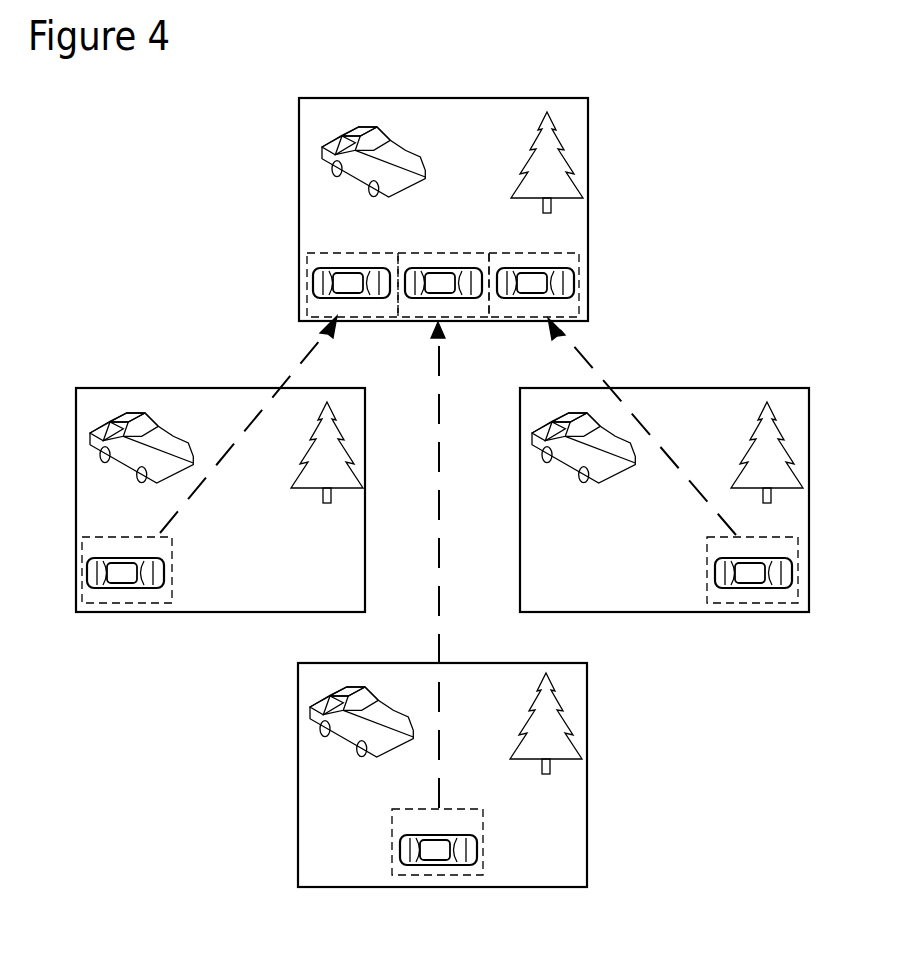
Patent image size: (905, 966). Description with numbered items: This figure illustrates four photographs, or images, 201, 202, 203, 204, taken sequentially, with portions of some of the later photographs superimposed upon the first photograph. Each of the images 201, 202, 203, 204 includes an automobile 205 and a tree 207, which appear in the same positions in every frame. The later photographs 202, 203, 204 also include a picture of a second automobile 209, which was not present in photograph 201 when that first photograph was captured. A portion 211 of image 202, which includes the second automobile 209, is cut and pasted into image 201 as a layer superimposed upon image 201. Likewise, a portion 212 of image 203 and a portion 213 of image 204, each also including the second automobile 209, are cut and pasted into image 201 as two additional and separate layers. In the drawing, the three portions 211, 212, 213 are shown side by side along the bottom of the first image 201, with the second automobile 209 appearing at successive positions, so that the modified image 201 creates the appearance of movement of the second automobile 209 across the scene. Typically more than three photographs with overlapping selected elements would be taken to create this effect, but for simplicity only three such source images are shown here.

The first photograph 201 is at (299, 125).
The second photograph 202 is at (76, 410).
The third photograph 203 is at (298, 692).
The fourth photograph 204 is at (520, 410).
The automobile 205 is at (322, 154).
The tree 207 is at (573, 178).
The second automobile 209 is at (165, 575).
The portion of image 202 211 is at (305, 285).
The portion of image 203 212 is at (422, 321).
The portion of image 204 213 is at (580, 287).